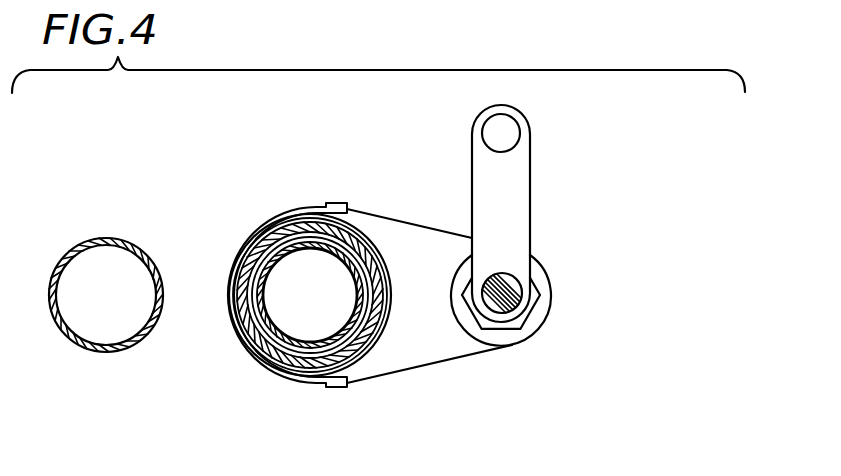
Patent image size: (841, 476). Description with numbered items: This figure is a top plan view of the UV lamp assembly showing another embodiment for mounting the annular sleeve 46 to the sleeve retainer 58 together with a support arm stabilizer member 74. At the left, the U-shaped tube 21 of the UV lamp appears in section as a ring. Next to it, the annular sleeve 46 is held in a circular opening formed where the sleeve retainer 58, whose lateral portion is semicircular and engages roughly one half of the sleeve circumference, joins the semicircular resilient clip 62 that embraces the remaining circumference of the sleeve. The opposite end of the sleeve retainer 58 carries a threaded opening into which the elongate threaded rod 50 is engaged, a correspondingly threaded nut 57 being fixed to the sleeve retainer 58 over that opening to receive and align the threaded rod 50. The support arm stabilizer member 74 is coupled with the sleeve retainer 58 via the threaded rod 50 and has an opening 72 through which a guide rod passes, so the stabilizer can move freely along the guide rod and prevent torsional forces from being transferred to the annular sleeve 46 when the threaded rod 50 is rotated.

The U-shaped tube 21 is at (245, 345).
The annular sleeve 46 is at (289, 230).
The resilient clip 62 is at (263, 359).
The sleeve retainer 58 is at (462, 357).
The threaded nut 57 is at (530, 316).
The support arm stabilizer member 74 is at (472, 183).
The opening 72 is at (503, 126).
The threaded rod 50 is at (514, 278).